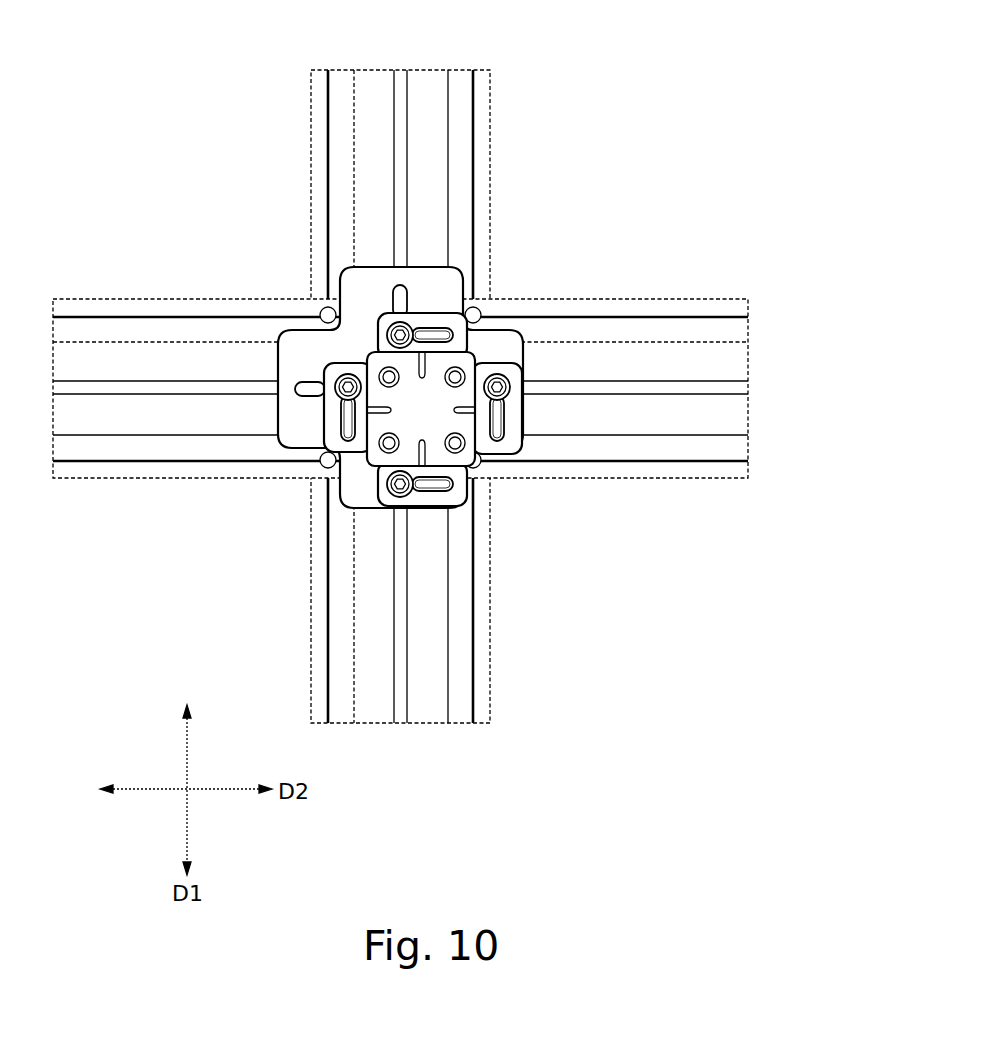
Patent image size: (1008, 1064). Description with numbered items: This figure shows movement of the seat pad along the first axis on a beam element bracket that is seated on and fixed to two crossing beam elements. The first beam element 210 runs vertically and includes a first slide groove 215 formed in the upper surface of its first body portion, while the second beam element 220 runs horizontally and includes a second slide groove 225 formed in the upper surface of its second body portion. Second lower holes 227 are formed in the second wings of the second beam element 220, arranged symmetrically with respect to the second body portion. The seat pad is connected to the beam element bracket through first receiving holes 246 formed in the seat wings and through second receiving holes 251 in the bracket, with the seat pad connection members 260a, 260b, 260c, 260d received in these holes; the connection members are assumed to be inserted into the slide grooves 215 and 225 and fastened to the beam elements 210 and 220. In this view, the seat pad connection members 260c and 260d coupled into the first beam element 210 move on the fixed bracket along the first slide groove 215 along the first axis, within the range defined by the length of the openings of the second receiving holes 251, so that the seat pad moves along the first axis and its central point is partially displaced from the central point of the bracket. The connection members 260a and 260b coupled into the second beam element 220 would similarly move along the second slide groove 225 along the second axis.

The first beam element 210 is at (315, 372).
The first slide groove 215 is at (400, 138).
The second beam element 220 is at (463, 403).
The second slide groove 225 is at (95, 387).
The second lower hole 227 is at (324, 309).
The first receiving hole 246 is at (457, 337).
The second receiving hole 251 is at (401, 283).
The seat pad connection member 260a is at (335, 380).
The seat pad connection member 260b is at (507, 391).
The seat pad connection member 260c is at (398, 322).
The seat pad connection member 260d is at (410, 497).